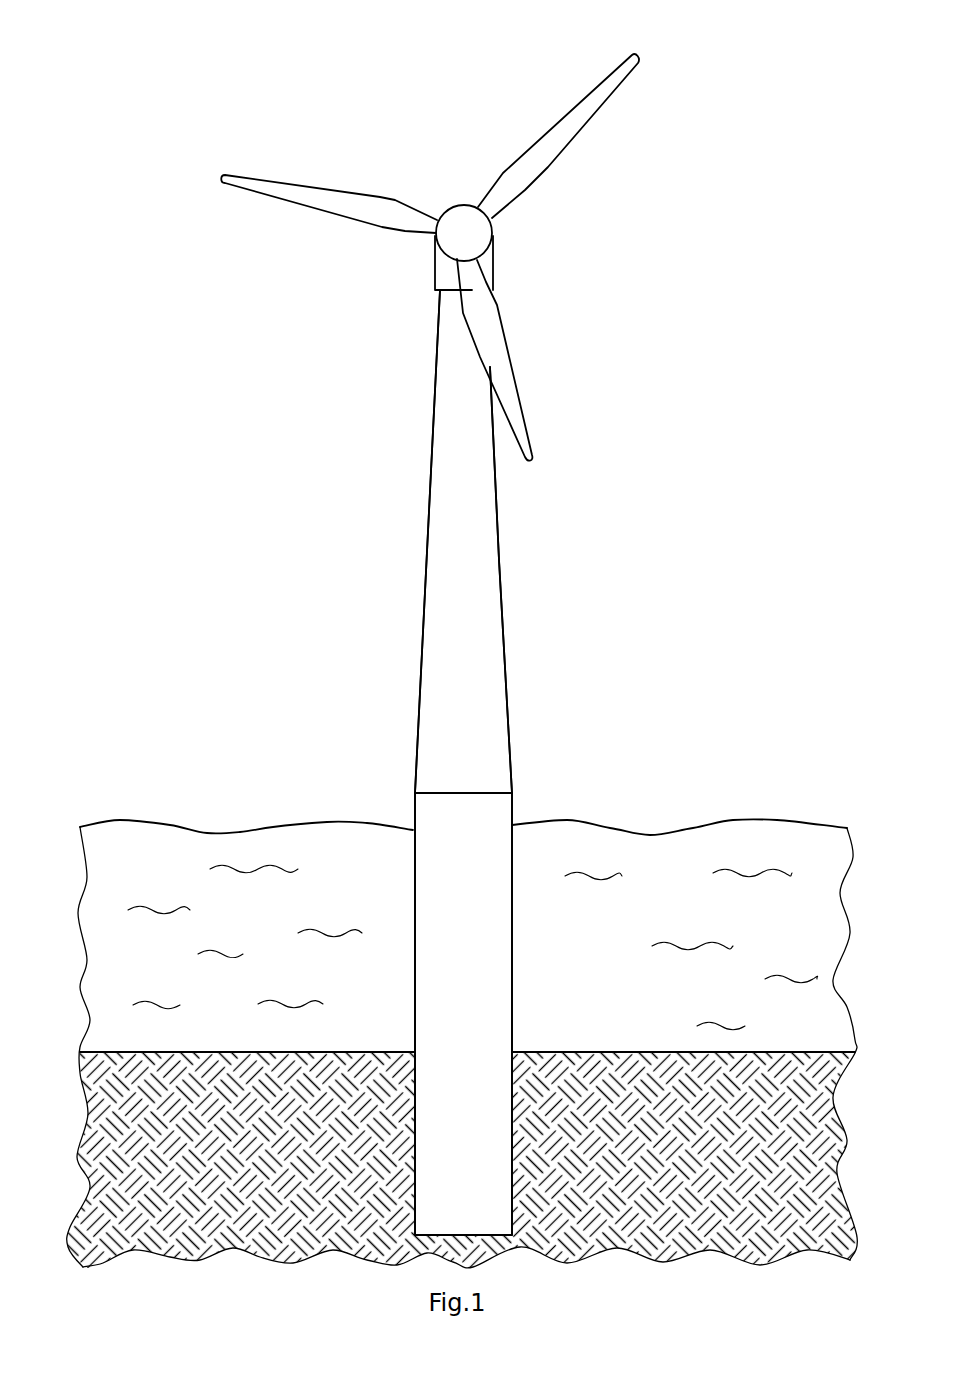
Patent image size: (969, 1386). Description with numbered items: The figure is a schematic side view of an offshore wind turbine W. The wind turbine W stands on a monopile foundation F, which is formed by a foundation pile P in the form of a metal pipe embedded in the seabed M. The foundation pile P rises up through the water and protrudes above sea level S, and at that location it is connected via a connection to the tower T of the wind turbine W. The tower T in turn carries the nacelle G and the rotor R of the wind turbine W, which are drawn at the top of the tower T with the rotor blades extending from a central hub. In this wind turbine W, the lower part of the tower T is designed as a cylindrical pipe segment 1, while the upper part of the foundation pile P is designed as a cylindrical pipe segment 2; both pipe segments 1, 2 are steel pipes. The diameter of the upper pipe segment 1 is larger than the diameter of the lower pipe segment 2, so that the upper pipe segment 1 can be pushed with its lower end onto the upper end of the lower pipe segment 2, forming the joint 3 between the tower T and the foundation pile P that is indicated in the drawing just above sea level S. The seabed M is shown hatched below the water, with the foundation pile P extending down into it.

The rotor R is at (370, 207).
The nacelle G is at (429, 265).
The wind turbine W is at (338, 418).
The tower T is at (448, 615).
The cylindrical pipe segment 1 is at (438, 705).
The connection / transition joint 3 is at (485, 793).
The sea level S is at (752, 820).
The cylindrical pipe segment 2 is at (440, 878).
The monopile foundation F is at (565, 1006).
The seabed M is at (240, 1087).
The foundation pile P is at (450, 1062).